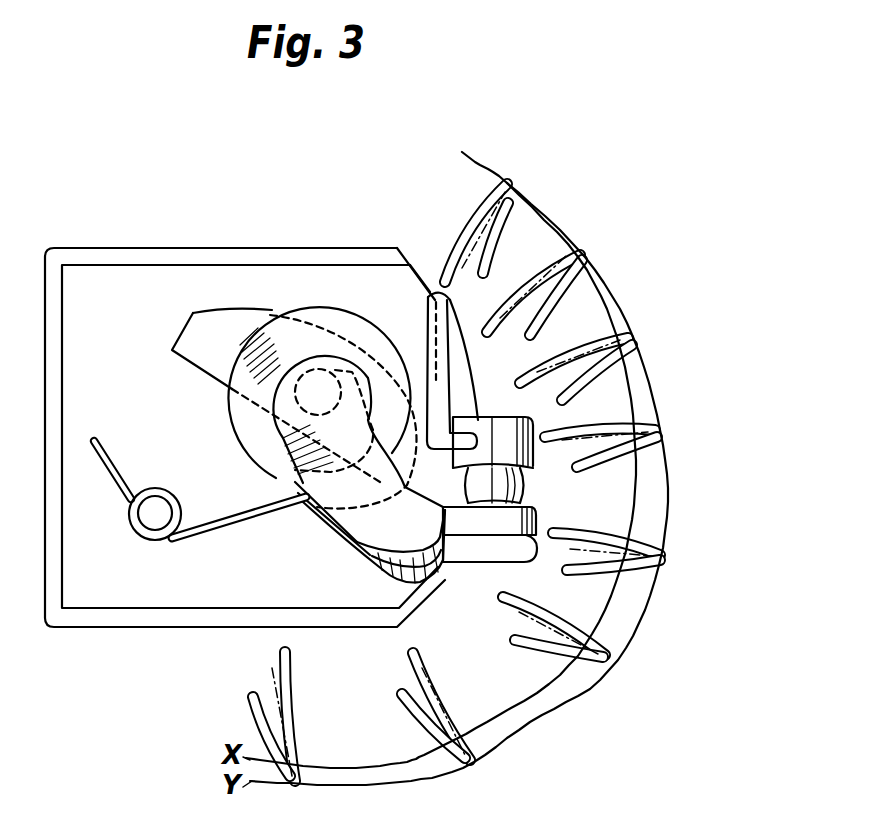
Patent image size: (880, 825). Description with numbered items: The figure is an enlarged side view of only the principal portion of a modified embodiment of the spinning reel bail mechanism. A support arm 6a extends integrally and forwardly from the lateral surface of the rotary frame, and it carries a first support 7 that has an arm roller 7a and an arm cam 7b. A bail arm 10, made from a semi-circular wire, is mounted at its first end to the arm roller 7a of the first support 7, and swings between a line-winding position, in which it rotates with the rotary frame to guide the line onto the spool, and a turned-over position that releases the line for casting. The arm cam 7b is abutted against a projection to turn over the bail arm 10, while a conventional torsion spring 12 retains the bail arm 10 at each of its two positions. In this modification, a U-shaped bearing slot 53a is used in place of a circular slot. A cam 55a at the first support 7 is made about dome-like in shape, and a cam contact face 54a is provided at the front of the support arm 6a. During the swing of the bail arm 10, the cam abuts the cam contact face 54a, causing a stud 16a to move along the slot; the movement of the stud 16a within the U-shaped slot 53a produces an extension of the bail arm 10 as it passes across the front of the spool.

The support arm 6a is at (163, 628).
The bail arm 10 is at (477, 218).
The stud 16a is at (318, 390).
The U-shaped bearing slot 53a is at (358, 345).
The first support 7 is at (358, 557).
The cam contact face 54a is at (438, 396).
The arm roller 7a is at (532, 458).
The cam 55a is at (456, 468).
The arm cam 7b is at (405, 542).
The torsion spring 12 is at (148, 540).